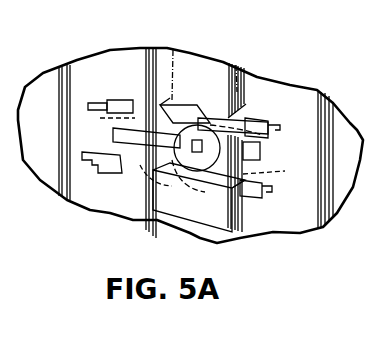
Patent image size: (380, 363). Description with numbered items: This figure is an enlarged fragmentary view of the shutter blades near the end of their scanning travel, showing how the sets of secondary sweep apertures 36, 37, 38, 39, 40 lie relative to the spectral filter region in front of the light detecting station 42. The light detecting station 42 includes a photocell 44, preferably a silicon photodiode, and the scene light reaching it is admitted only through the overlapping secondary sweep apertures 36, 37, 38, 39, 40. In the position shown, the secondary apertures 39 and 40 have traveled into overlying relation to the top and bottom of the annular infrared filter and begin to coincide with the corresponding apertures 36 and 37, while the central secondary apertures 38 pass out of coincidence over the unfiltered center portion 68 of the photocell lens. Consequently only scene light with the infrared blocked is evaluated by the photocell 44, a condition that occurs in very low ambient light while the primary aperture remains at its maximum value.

The secondary sweep aperture 36 is at (123, 97).
The secondary sweep aperture 37 is at (113, 176).
The central secondary aperture 38 is at (113, 134).
The secondary sweep aperture 39 is at (207, 130).
The secondary sweep aperture 40 is at (225, 195).
The light detecting station 42 is at (236, 65).
The photocell 44 is at (173, 50).
The center portion of the photocell lens 68 is at (222, 98).